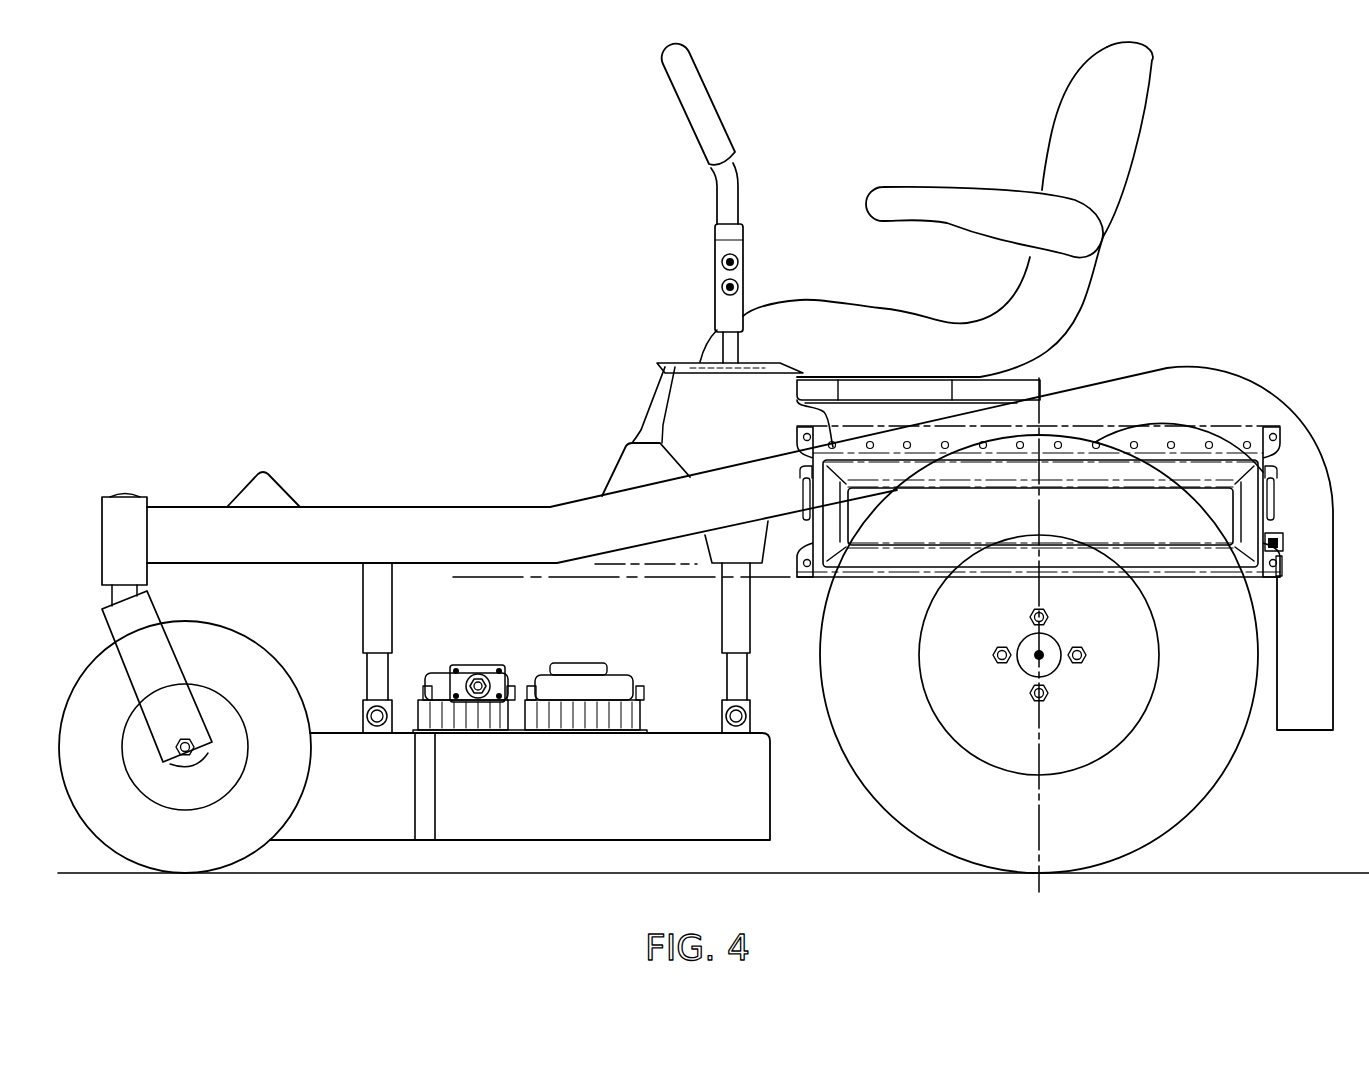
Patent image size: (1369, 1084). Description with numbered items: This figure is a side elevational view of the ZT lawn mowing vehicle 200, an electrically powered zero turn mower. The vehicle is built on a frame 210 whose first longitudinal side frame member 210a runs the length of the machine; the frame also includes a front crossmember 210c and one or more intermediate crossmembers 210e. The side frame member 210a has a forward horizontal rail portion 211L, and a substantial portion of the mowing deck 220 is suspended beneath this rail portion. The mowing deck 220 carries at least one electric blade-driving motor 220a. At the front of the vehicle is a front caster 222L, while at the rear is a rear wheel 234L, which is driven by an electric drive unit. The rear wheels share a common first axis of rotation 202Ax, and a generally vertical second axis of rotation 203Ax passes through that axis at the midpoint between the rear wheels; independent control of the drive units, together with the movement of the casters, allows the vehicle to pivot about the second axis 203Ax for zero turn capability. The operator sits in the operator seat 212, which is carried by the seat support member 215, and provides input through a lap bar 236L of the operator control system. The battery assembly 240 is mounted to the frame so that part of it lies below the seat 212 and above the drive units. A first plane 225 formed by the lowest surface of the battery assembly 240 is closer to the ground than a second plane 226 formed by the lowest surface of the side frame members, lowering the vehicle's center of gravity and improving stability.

The ZT lawn mowing vehicle 200 is at (186, 115).
The frame 210 is at (480, 458).
The first longitudinal side frame member 210a is at (520, 547).
The front crossmember 210c is at (277, 481).
The intermediate crossmember 210e is at (614, 464).
The forward horizontal rail portion 211L is at (330, 548).
The operator seat 212 is at (1054, 126).
The seat support member 215 is at (882, 400).
The mowing deck 220 is at (612, 795).
The electric blade-driving motor 220a is at (436, 680).
The front caster 222L is at (215, 853).
The first plane 225 is at (634, 580).
The second plane 226 is at (648, 563).
The rear wheel 234L is at (1150, 812).
The lap bar 236L is at (700, 95).
The battery assembly 240 is at (1296, 456).
The first axis of rotation 202Ax is at (1040, 654).
The second axis of rotation 203Ax is at (1037, 826).